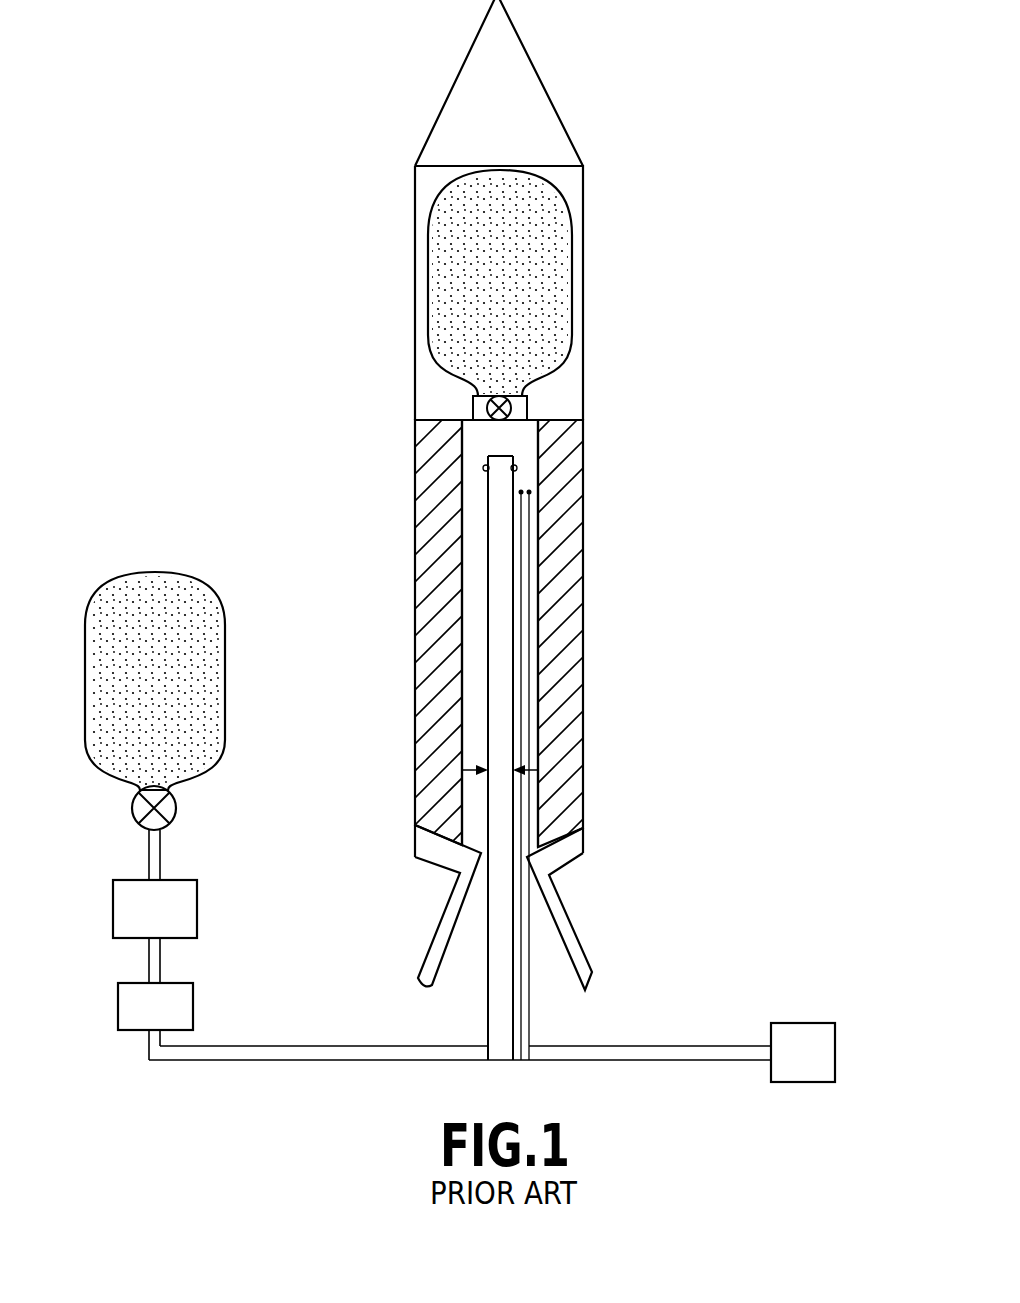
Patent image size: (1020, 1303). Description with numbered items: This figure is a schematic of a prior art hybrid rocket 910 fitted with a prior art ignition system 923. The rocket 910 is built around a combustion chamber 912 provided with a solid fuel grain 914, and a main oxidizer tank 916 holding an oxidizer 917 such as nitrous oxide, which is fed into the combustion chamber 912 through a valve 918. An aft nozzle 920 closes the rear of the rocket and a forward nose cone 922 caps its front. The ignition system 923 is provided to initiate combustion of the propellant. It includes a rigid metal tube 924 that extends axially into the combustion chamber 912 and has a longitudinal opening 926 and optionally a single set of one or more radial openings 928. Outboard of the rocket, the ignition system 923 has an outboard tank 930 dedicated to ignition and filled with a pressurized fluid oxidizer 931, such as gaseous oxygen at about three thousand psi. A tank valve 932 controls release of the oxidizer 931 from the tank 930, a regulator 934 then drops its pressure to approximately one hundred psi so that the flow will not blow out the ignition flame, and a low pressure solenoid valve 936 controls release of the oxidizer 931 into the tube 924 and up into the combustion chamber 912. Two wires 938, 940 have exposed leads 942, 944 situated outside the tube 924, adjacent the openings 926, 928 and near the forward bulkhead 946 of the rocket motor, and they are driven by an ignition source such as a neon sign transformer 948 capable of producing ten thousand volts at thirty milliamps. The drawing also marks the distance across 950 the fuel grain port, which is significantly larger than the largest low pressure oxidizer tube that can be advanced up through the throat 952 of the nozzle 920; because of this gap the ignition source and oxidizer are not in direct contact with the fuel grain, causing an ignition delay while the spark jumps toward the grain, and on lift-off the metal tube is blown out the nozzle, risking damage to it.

The hybrid rocket 910 is at (662, 187).
The combustion chamber 912 is at (532, 460).
The solid fuel grain 914 is at (578, 650).
The main oxidizer tank 916 is at (575, 290).
The oxidizer 917 is at (553, 260).
The valve 918 is at (525, 398).
The aft nozzle 920 is at (575, 920).
The forward nose cone 922 is at (547, 78).
The ignition system 923 is at (483, 492).
The rigid metal tube 924 is at (495, 683).
The longitudinal opening 926 is at (482, 442).
The radial openings 928 is at (483, 468).
The outboard tank 930 is at (207, 590).
The pressurized fluid oxidizer 931 is at (210, 698).
The tank valve 932 is at (174, 800).
The regulator 934 is at (198, 912).
The low pressure solenoid valve 936 is at (195, 1003).
The wire 938 is at (718, 1060).
The wire 940 is at (710, 1045).
The exposed lead 942 is at (521, 495).
The exposed lead 944 is at (530, 494).
The forward bulkhead 946 is at (533, 453).
The neon sign transformer 948 is at (805, 1023).
The fuel grain port diameter 950 is at (470, 778).
The throat 952 is at (482, 862).